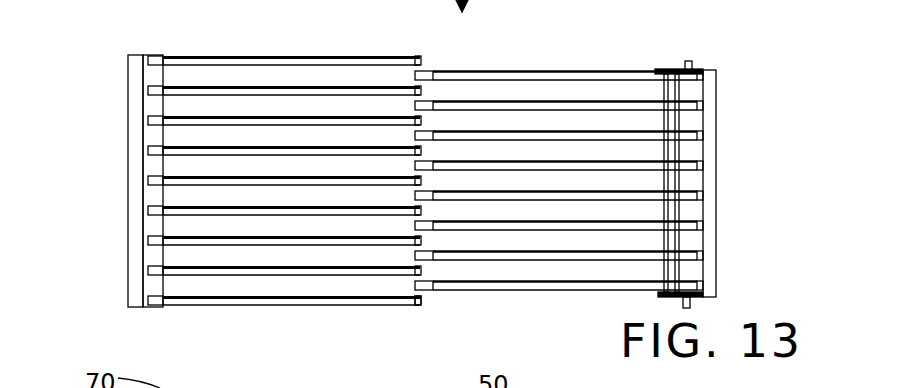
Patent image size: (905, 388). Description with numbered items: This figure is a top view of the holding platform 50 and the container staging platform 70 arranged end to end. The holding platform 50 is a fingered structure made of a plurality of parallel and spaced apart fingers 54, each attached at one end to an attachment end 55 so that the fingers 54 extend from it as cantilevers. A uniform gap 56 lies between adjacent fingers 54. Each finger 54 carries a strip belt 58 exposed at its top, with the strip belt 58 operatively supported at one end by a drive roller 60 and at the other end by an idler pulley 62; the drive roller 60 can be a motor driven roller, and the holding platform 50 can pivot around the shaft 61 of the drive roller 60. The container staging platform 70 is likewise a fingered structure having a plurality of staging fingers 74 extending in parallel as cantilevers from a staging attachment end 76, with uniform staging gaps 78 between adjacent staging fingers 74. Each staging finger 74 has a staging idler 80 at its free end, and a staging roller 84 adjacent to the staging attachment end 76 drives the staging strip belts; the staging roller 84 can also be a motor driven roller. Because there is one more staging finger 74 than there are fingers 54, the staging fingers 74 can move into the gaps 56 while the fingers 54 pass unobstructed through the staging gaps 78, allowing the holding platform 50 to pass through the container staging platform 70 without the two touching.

The container staging platform 70 is at (176, 46).
The staging roller 84 is at (153, 80).
The staging attachment end 76 is at (128, 293).
The staging gaps 78 is at (303, 108).
The staging fingers 74 is at (268, 268).
The staging idler 80 is at (420, 305).
The idler pulley 62 is at (425, 70).
The strip belt 58 is at (503, 105).
The gap 56 is at (517, 243).
The fingers 54 is at (573, 265).
The holding platform 50 is at (570, 65).
The attachment end 55 is at (716, 72).
The drive roller 60 is at (690, 95).
The shaft 61 is at (690, 305).